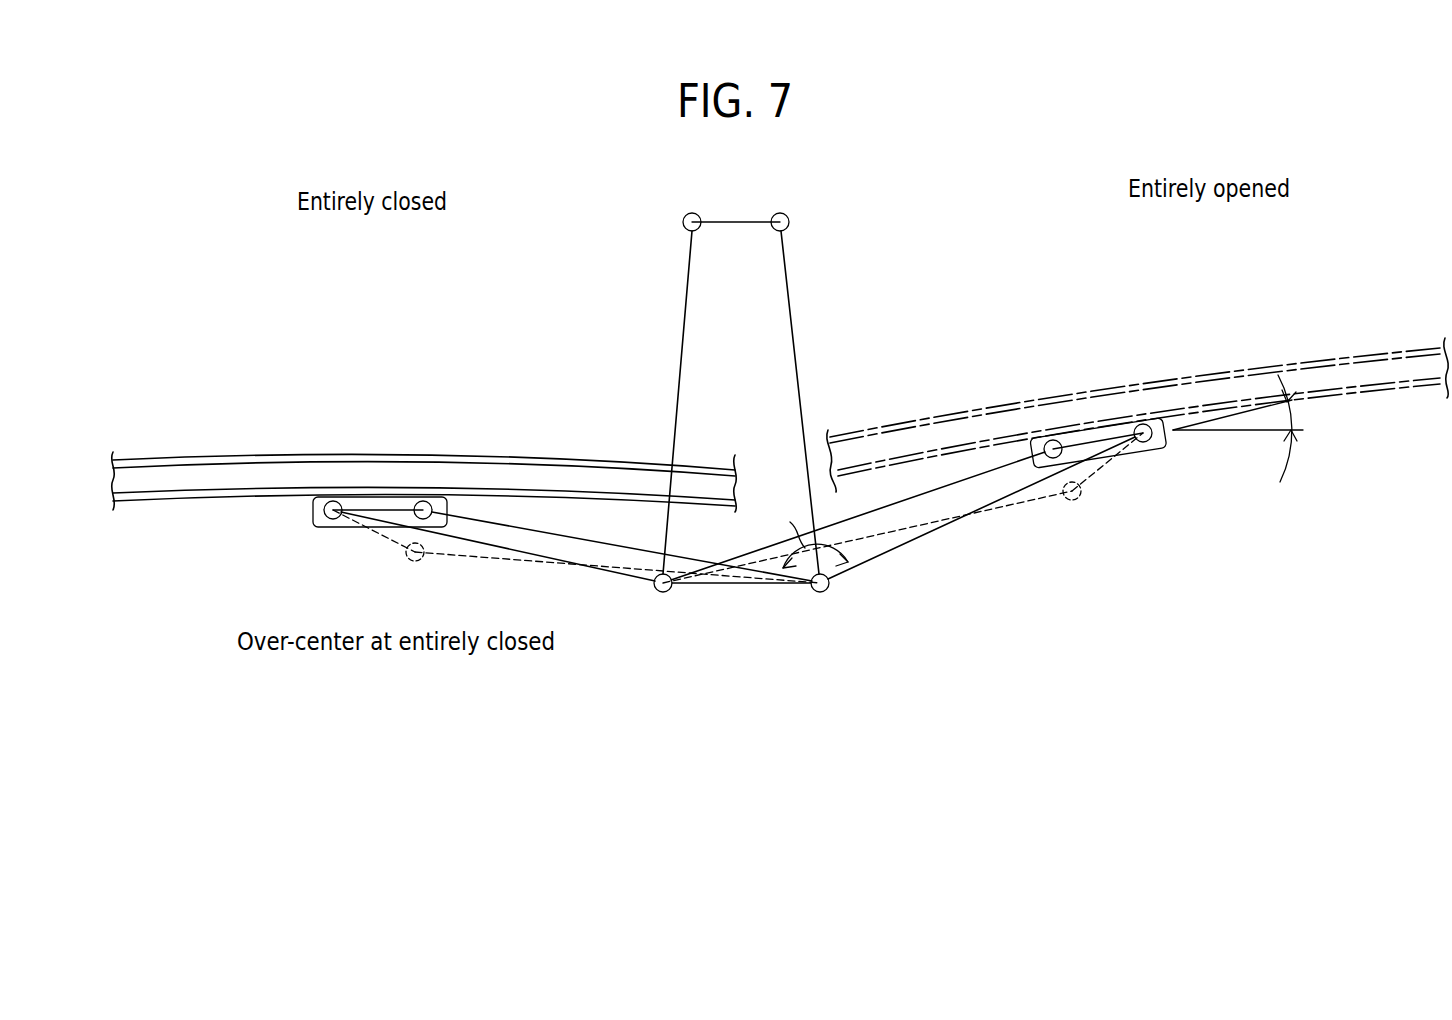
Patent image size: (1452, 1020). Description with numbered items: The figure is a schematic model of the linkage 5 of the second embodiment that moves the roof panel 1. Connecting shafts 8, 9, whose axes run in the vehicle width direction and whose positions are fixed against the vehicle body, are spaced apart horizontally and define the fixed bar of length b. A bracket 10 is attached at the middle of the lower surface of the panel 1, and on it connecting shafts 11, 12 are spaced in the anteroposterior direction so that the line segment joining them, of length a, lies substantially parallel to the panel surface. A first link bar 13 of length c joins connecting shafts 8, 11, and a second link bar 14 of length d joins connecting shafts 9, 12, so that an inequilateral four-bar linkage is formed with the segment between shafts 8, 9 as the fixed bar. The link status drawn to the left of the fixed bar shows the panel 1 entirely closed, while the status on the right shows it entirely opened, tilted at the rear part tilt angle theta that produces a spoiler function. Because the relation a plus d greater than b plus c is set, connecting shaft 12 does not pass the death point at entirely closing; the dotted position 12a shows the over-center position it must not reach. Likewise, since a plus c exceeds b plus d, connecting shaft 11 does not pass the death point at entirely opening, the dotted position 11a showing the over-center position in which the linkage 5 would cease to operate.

The panel 1 is at (240, 458).
The linkage 5 is at (822, 275).
The connecting shaft 8 is at (663, 593).
The connecting shaft 9 is at (820, 593).
The bracket 10 is at (322, 530).
The connecting shaft 11 is at (683, 222).
The connecting shaft position (over-center at entirely opened) 11a is at (1078, 500).
The connecting shaft 12 is at (790, 220).
The connecting shaft position (over-center at entirely closed) 12a is at (411, 562).
The first link bar 13 is at (683, 325).
The second link bar 14 is at (800, 318).